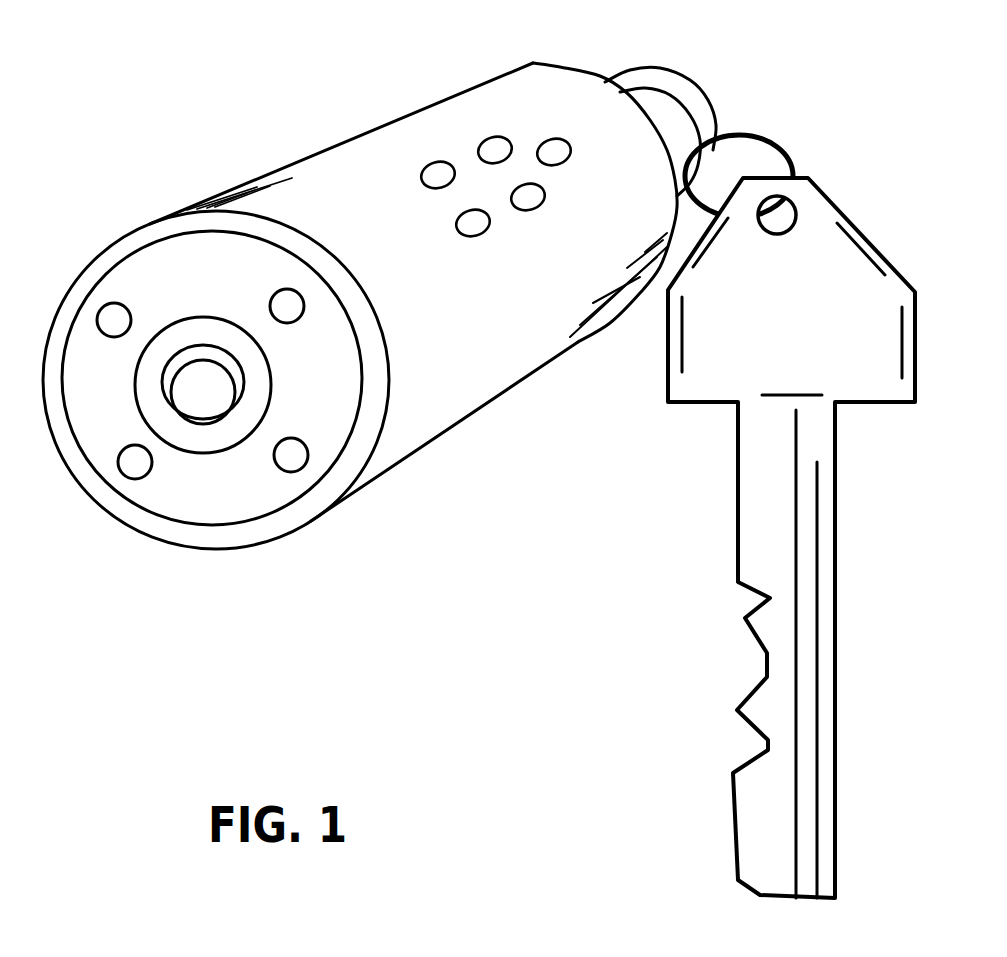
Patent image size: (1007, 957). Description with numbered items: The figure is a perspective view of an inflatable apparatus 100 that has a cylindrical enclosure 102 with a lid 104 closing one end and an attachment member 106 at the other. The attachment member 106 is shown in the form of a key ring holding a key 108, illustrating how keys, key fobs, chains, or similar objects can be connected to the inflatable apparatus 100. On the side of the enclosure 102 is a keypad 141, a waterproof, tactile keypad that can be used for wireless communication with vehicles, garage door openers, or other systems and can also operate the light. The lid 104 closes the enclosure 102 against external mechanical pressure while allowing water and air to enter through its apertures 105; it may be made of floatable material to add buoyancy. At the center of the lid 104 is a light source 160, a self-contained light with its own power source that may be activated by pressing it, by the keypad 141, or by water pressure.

The inflatable apparatus 100 is at (149, 102).
The enclosure 102 is at (357, 133).
The lid 104 is at (272, 523).
The apertures 105 is at (105, 340).
The attachment member 106 is at (712, 102).
The key 108 is at (837, 613).
The keypad 141 is at (424, 193).
The light source 160 is at (217, 363).